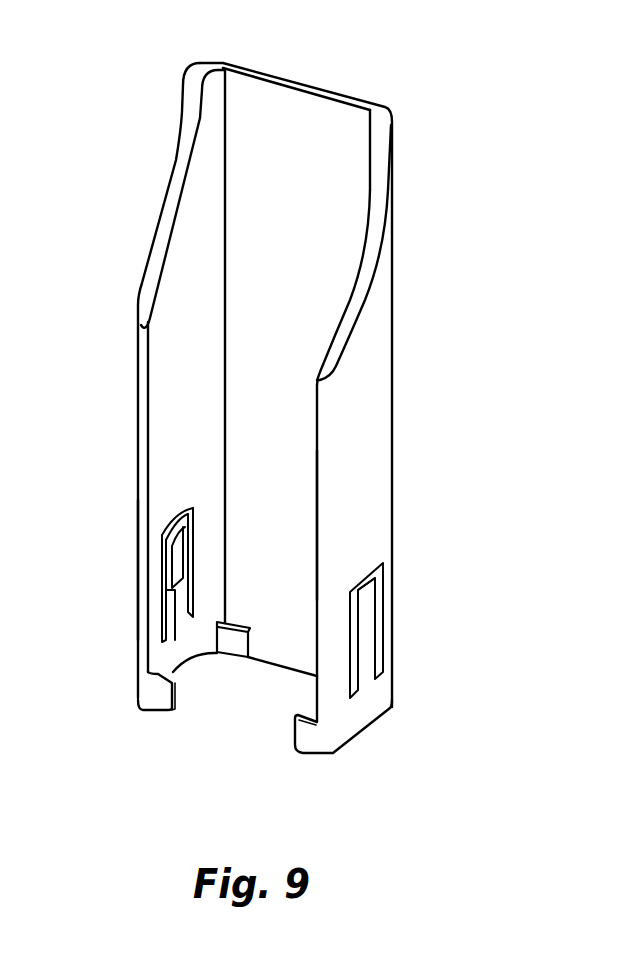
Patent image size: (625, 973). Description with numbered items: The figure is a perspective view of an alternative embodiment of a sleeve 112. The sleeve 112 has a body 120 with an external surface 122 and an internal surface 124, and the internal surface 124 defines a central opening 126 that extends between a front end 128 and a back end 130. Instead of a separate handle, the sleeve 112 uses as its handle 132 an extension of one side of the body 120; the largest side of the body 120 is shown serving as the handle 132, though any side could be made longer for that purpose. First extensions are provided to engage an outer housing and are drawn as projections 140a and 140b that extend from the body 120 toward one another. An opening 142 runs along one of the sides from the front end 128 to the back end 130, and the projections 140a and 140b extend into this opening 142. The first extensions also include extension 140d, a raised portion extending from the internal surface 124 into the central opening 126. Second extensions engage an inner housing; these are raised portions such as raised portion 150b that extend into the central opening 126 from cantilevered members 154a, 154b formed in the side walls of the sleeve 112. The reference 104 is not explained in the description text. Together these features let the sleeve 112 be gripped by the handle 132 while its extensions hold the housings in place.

The sleeve 112 is at (285, 423).
The side wall 104 is at (143, 575).
The body 120 is at (392, 482).
The external surface 122 is at (363, 437).
The internal surface 124 is at (172, 337).
The central opening 126 is at (278, 298).
The front end 128 is at (287, 670).
The back end 130 is at (340, 343).
The handle 132 is at (378, 142).
The projection 140a is at (308, 737).
The projection 140b is at (160, 698).
The extension 140d is at (230, 647).
The opening 142 is at (300, 627).
The raised portion 150b is at (180, 552).
The cantilevered member 154a is at (370, 658).
The cantilevered member 154b is at (177, 603).